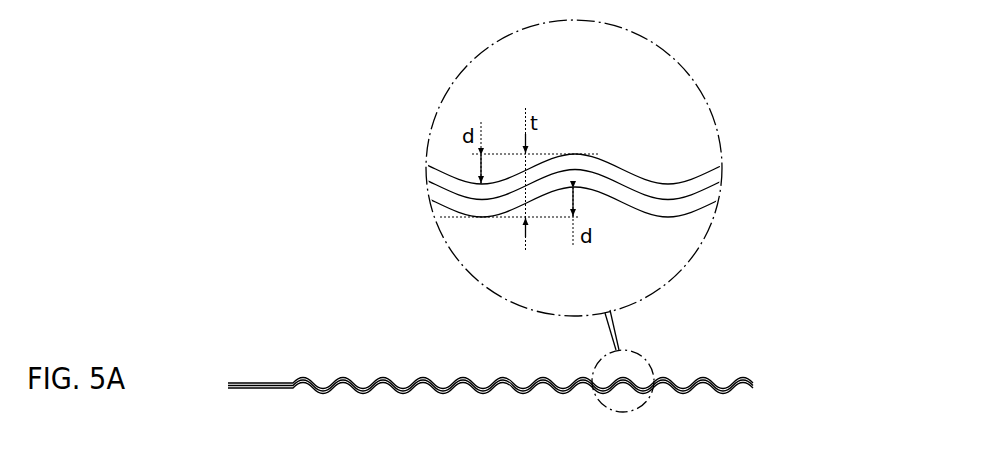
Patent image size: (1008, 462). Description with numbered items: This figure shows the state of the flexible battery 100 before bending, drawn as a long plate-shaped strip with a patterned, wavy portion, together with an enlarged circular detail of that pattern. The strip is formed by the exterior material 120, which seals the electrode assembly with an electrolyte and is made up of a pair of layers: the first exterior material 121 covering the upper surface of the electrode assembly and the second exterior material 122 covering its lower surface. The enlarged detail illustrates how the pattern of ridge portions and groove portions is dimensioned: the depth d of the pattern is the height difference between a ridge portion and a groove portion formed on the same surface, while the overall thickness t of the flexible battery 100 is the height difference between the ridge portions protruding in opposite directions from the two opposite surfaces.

The flexible battery 100 is at (298, 282).
The exterior material 120 is at (561, 388).
The first exterior material 121 is at (740, 382).
The second exterior material 122 is at (744, 390).